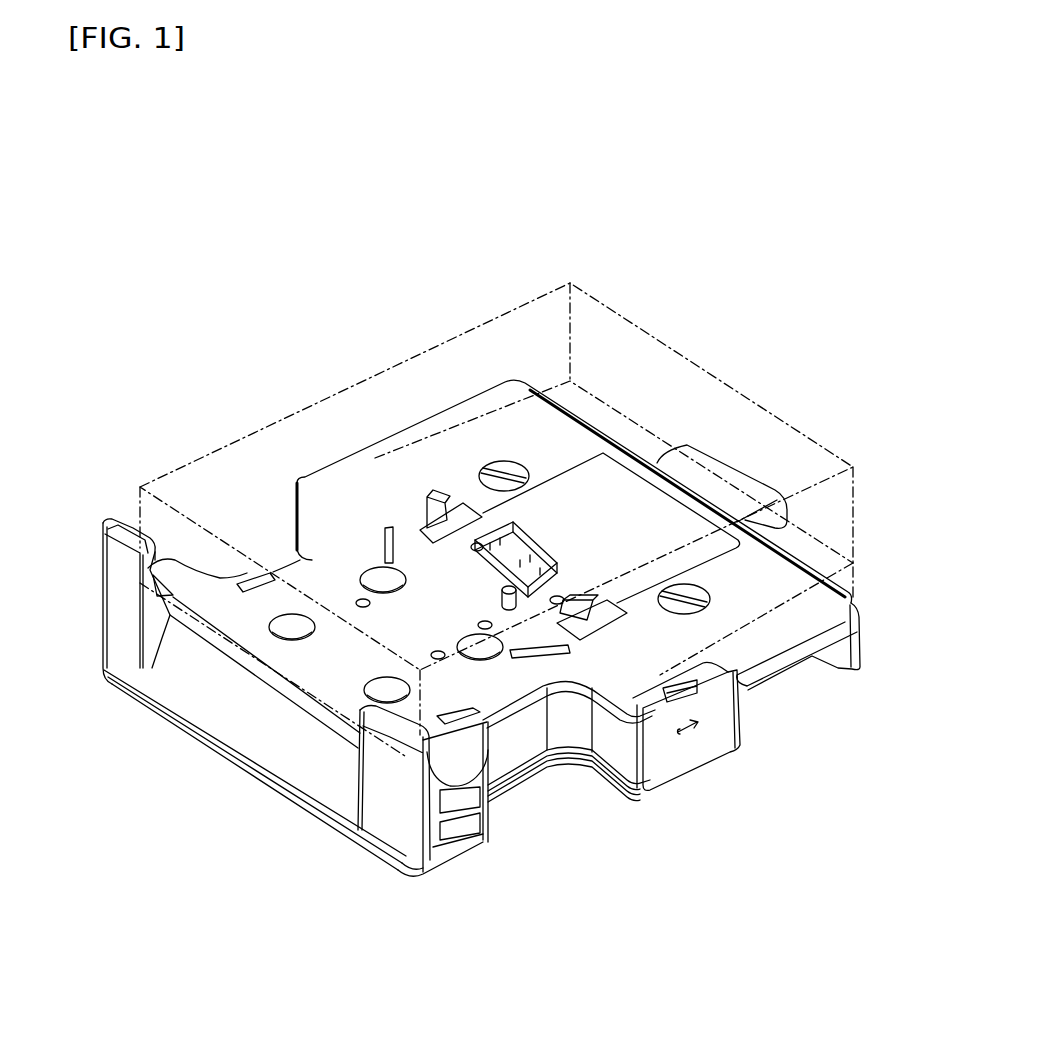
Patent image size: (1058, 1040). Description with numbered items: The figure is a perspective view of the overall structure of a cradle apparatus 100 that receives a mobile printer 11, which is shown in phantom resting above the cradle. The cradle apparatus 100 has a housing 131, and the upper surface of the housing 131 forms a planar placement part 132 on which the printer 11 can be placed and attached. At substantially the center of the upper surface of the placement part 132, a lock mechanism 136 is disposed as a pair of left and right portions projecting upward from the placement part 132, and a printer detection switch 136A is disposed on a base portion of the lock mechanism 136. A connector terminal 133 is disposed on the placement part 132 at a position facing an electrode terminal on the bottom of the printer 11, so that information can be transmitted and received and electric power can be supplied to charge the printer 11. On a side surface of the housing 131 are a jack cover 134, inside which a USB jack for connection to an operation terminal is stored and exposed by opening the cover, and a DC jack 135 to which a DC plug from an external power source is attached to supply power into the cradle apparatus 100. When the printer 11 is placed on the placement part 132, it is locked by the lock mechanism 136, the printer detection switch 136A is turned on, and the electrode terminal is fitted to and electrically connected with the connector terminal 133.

The cradle apparatus 100 is at (505, 599).
The mobile printer 11 is at (423, 352).
The housing 131 is at (186, 684).
The placement part 132 is at (780, 587).
The connector terminal 133 is at (398, 578).
The jack cover 134 is at (703, 740).
The DC jack 135 is at (782, 680).
The lock mechanism 136 is at (590, 583).
The printer detection switch 136A is at (500, 592).